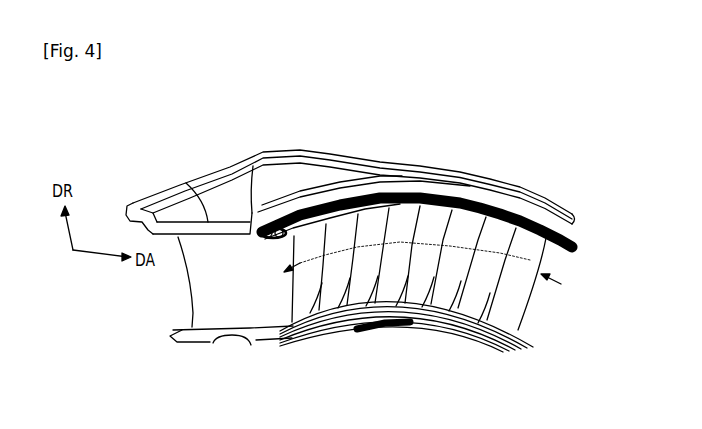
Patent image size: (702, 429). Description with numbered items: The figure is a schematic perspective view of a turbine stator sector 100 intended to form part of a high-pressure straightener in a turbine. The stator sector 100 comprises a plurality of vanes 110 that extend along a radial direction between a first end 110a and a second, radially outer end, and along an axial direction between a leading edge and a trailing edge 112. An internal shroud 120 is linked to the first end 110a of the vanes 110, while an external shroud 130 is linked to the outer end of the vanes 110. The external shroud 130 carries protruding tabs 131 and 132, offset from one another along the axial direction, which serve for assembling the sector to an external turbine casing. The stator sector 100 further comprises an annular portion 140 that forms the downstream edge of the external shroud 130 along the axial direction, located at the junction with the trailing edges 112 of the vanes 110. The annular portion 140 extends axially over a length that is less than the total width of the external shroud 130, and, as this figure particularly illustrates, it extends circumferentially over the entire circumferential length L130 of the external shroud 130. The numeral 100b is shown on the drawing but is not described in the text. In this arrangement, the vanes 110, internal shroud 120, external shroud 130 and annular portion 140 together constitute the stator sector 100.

The turbine stator sector 100 is at (352, 151).
The outer shroud surface 100b is at (417, 205).
The vanes 110 is at (415, 288).
The first end 110a is at (406, 337).
The trailing edge 112 is at (400, 341).
The internal shroud 120 is at (231, 304).
The external shroud 130 is at (358, 191).
The protruding tab 131 is at (127, 204).
The protruding tab 132 is at (345, 170).
The annular portion 140 is at (244, 250).
The circumferential length of the external shroud L130 is at (552, 292).